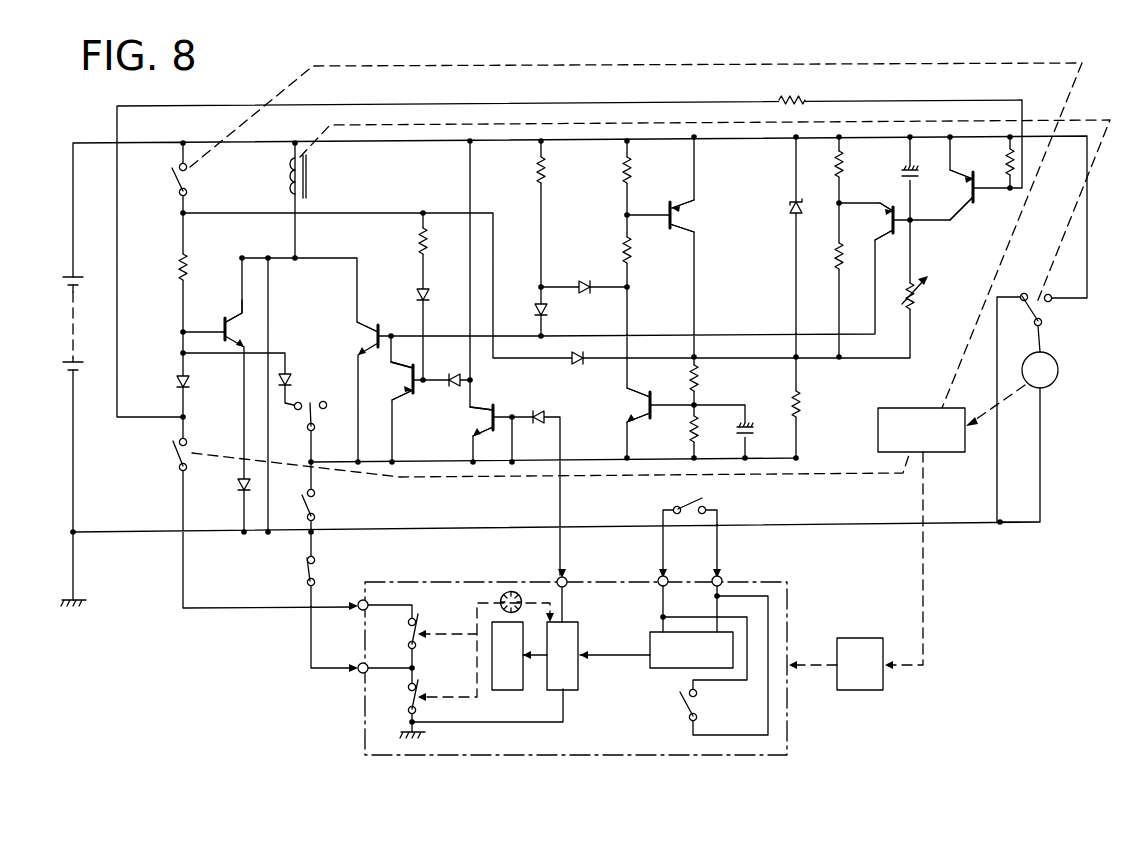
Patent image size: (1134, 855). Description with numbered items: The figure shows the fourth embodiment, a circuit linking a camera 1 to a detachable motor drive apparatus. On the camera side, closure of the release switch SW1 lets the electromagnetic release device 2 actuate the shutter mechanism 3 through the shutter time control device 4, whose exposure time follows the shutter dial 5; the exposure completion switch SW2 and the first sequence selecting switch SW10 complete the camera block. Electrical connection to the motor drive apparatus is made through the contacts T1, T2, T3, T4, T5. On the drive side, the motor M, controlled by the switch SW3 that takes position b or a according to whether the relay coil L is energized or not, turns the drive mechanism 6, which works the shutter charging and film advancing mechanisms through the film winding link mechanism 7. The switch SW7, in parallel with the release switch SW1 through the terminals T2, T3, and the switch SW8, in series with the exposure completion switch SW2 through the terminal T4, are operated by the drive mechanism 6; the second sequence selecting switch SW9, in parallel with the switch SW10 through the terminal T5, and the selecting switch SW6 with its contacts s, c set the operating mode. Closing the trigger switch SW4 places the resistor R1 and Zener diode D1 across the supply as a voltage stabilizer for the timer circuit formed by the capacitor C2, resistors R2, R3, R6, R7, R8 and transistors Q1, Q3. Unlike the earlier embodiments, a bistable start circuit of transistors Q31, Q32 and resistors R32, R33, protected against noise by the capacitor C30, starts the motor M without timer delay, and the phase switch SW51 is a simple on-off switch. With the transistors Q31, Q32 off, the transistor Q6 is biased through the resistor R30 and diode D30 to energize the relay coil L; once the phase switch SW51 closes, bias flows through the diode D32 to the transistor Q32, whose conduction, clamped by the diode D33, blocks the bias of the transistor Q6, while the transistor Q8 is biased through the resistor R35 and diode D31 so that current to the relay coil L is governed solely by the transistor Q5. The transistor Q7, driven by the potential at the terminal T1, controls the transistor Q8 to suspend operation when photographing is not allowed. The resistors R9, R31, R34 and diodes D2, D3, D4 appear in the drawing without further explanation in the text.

The camera 1 is at (787, 600).
The electromagnetic release device 2 is at (691, 650).
The shutter mechanism 3 is at (507, 656).
The shutter time control device 4 is at (562, 656).
The shutter dial 5 is at (508, 591).
The drive mechanism 6 is at (938, 452).
The film winding link mechanism 7 is at (860, 690).
The relay coil L is at (309, 183).
The motor M is at (1040, 370).
The phase switch SW51 is at (180, 182).
The selecting switch SW6 is at (310, 400).
The switch SW8 is at (172, 452).
The trigger switch SW4 is at (316, 503).
The switch SW3 is at (1040, 312).
The switch SW7 is at (704, 500).
The second sequence selecting switch SW9 is at (306, 572).
The exposure completion switch SW2 is at (417, 620).
The first sequence selecting switch SW10 is at (420, 685).
The release switch SW1 is at (678, 702).
The resistor R1 is at (802, 398).
The resistor R2 is at (844, 160).
The resistor R3 is at (834, 266).
The resistor R6 is at (918, 300).
The resistor R7 is at (1004, 162).
The resistor R8 is at (806, 98).
The resistor R9 is at (178, 268).
The resistor R30 is at (536, 175).
The resistor R31 is at (622, 176).
The resistor R32 is at (632, 255).
The resistor R33 is at (700, 376).
The resistor R34 is at (689, 431).
The resistor R35 is at (418, 244).
The capacitor C2 is at (900, 174).
The capacitor C30 is at (754, 428).
The Zener diode D1 is at (790, 213).
The diode D2 is at (190, 384).
The diode D3 is at (285, 372).
The diode D4 is at (238, 486).
The diode D30 is at (548, 312).
The diode D31 is at (418, 292).
The diode D32 is at (572, 362).
The diode D33 is at (583, 280).
The transistor Q1 is at (889, 225).
The transistor Q3 is at (968, 200).
The transistor Q5 is at (236, 318).
The transistor Q6 is at (364, 328).
The transistor Q7 is at (488, 416).
The transistor Q8 is at (410, 398).
The transistor Q31 is at (675, 216).
The transistor Q32 is at (645, 396).
The contact T1 is at (556, 578).
The contact T2 is at (712, 578).
The contact T3 is at (658, 578).
The contact T4 is at (358, 602).
The contact T5 is at (360, 672).
The position of switch SW3 a is at (1022, 293).
The position of switch SW3 b is at (1049, 294).
The switch contact s is at (298, 410).
The switch contact c is at (323, 409).